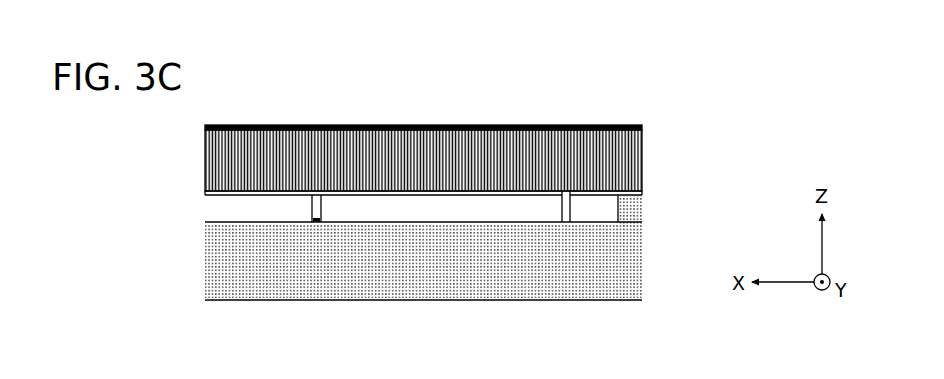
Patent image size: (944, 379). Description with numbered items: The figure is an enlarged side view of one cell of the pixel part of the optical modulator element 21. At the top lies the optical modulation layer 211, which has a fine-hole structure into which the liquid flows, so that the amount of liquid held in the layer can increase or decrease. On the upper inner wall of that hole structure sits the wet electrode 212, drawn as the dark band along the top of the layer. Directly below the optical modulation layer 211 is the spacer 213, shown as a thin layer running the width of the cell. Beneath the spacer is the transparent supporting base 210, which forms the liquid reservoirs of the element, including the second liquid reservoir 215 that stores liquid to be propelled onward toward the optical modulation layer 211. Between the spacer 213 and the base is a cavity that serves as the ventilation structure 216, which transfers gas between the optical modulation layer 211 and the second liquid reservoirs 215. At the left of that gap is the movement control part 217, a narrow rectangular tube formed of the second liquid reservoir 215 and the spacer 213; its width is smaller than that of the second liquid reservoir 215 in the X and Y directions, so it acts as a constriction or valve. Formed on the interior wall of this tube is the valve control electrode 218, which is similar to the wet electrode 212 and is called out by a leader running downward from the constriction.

The optical modulator element 21 is at (582, 102).
The transparent supporting base 210 is at (215, 267).
The optical modulation layer 211 is at (203, 157).
The wet electrode 212 is at (447, 125).
The spacer 213 is at (205, 193).
The second liquid reservoir 215 is at (208, 222).
The ventilation structure 216 is at (598, 226).
The movement control part 217 is at (310, 212).
The valve control electrode 218 is at (316, 222).